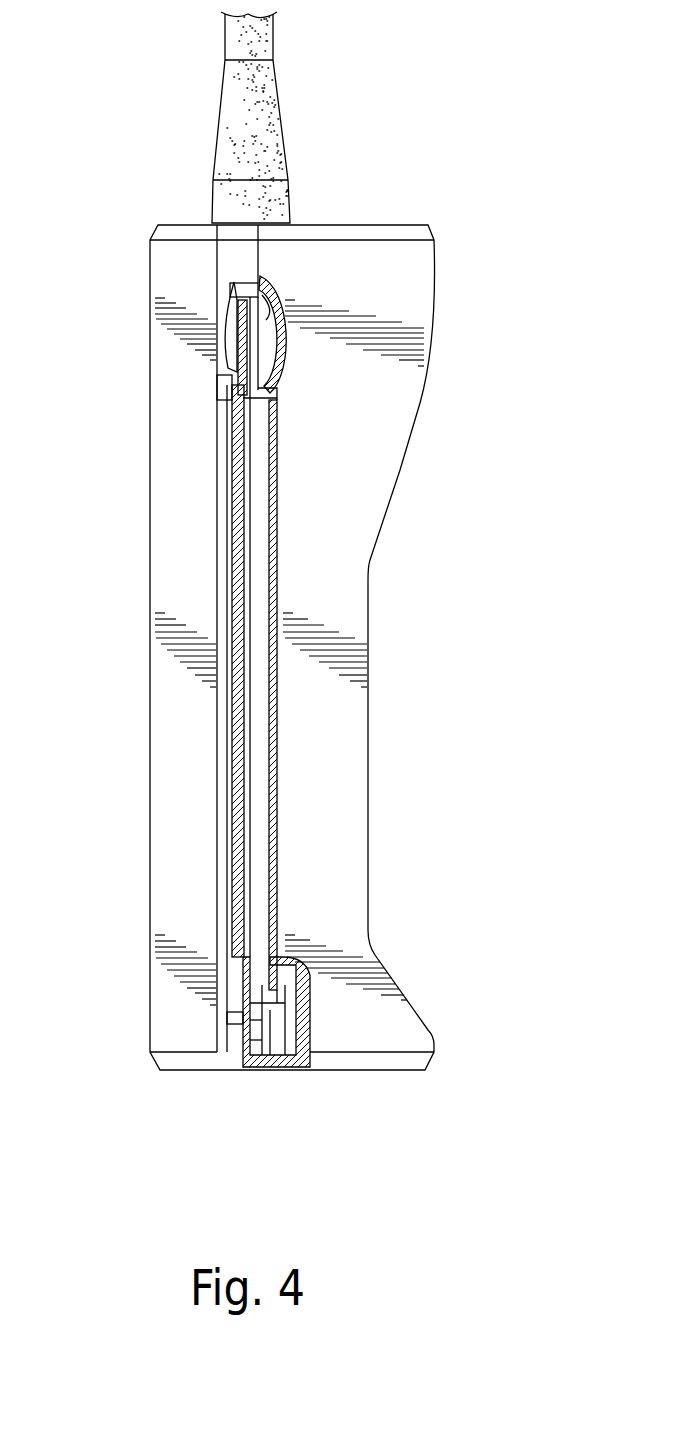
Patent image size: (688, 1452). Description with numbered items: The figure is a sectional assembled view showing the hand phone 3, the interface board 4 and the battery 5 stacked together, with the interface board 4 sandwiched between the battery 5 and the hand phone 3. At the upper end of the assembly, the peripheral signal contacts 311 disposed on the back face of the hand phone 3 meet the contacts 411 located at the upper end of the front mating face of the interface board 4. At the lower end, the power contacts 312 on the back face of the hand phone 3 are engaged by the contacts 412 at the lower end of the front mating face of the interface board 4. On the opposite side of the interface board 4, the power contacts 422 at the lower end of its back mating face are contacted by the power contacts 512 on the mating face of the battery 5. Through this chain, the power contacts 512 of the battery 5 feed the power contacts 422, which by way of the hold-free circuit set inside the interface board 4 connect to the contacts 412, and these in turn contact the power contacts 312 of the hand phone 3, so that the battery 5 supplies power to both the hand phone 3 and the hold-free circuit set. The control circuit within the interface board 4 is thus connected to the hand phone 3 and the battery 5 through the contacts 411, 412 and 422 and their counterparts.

The hand phone 3 is at (398, 257).
The interface board 4 is at (243, 232).
The battery 5 is at (162, 270).
The peripheral signal contacts 311 is at (268, 275).
The power contacts 312 is at (308, 1003).
The contacts 411 is at (238, 290).
The contacts 412 is at (278, 1005).
The power contacts 422 is at (241, 1052).
The power contacts 512 is at (237, 1012).